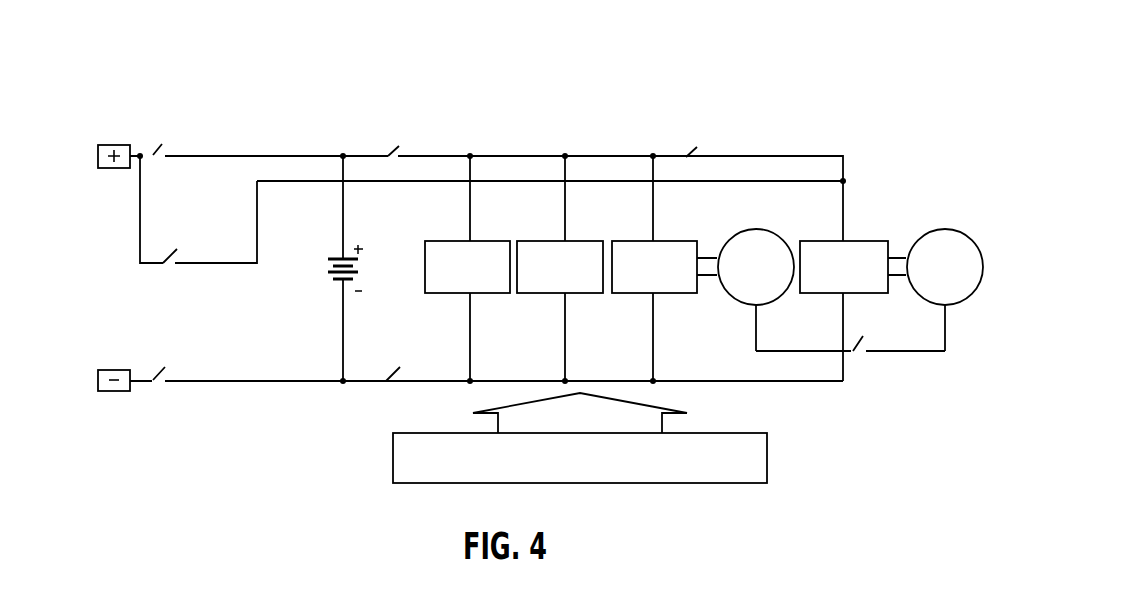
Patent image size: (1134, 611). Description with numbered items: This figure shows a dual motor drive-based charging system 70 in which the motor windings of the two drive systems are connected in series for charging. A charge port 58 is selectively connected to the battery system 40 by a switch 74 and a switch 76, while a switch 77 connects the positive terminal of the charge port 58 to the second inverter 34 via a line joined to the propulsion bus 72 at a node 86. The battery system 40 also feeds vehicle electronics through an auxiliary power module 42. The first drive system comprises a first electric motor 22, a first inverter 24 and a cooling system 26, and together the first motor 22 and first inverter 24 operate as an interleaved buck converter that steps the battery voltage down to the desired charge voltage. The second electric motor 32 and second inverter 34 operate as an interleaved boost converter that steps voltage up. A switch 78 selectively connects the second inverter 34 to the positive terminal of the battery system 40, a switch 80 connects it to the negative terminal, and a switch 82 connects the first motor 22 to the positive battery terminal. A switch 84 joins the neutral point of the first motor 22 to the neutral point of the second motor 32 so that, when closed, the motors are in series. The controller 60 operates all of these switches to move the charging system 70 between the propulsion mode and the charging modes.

The charging system 70 is at (848, 51).
The charge port 58 is at (112, 170).
The switch 74 is at (164, 150).
The switch 78 is at (400, 148).
The switch 82 is at (690, 156).
The node 86 is at (845, 181).
The switch 77 is at (177, 250).
The battery system 40 is at (340, 257).
The auxiliary power module 42 is at (475, 241).
The cooling system 26 is at (570, 241).
The first inverter 24 is at (659, 241).
The first electric motor 22 is at (775, 232).
The second inverter 34 is at (852, 241).
The second electric motor 32 is at (945, 229).
The switch 84 is at (860, 345).
The propulsion bus 72 is at (290, 383).
The switch 80 is at (388, 381).
The switch 76 is at (158, 379).
The controller 60 is at (757, 455).